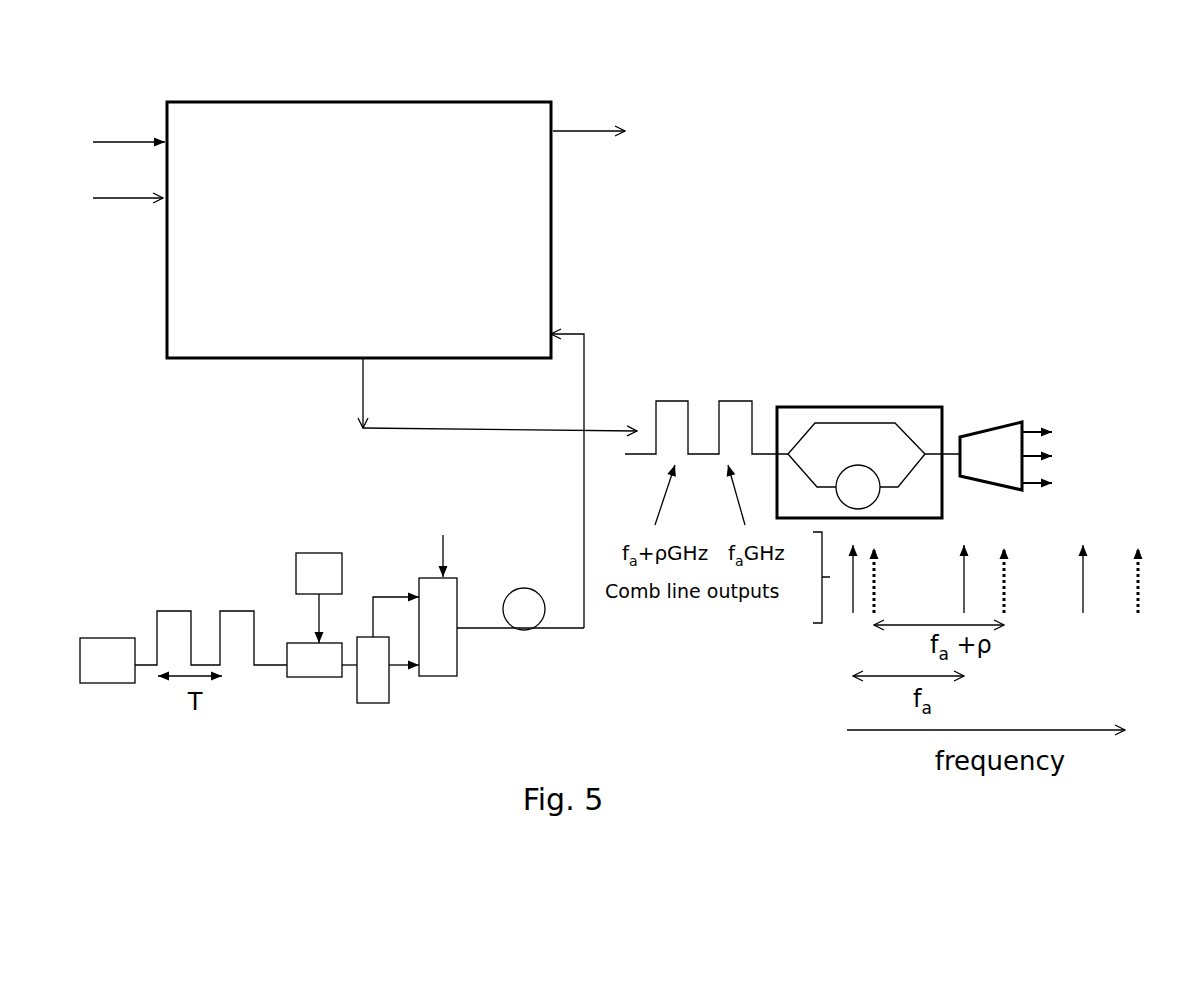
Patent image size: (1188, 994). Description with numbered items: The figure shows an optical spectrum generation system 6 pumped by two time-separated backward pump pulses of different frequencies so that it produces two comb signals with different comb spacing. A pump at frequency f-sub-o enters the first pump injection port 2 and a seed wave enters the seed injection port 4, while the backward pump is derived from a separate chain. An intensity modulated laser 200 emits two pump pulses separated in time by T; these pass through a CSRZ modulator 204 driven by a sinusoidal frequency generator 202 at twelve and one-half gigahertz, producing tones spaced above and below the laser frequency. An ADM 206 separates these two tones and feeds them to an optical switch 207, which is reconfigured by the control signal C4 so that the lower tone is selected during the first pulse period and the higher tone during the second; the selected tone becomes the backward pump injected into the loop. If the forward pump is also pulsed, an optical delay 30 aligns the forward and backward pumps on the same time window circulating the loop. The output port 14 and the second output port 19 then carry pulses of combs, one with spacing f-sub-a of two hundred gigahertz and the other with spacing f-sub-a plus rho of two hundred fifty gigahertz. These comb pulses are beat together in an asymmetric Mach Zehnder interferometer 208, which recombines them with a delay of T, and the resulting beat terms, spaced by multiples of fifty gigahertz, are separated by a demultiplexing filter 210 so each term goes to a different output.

The optical spectrum generation system 6 is at (379, 345).
The first pump injection port 2 is at (129, 124).
The seed injection port 4 is at (128, 187).
The output port 14 is at (599, 107).
The second output port 19 is at (479, 394).
The optical delay 30 is at (524, 593).
The control signal C4 is at (442, 539).
The intensity modulated laser 200 is at (107, 660).
The sinusoidal frequency generator 202 is at (319, 598).
The CSRZ modulator 204 is at (314, 674).
The ADM 206 is at (388, 670).
The optical switch 207 is at (438, 642).
The asymmetric Mach Zehnder interferometer 208 is at (868, 448).
The demultiplexing filter 210 is at (1006, 445).